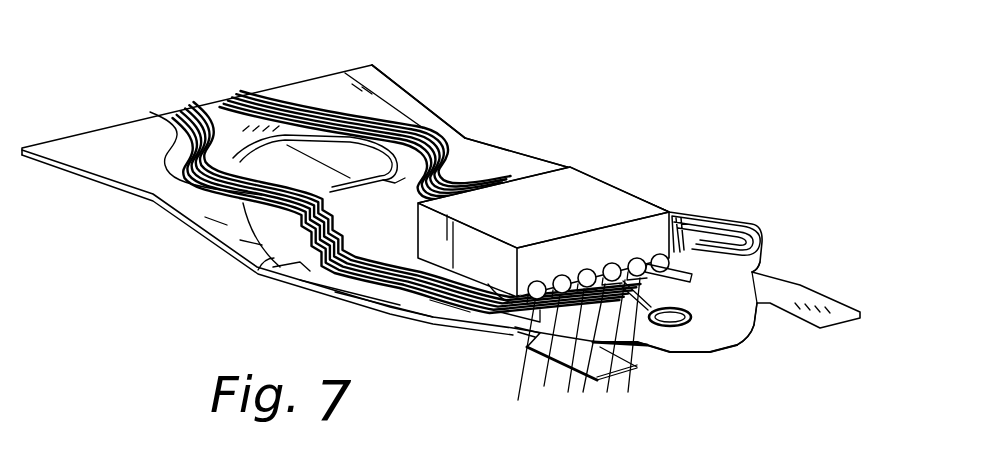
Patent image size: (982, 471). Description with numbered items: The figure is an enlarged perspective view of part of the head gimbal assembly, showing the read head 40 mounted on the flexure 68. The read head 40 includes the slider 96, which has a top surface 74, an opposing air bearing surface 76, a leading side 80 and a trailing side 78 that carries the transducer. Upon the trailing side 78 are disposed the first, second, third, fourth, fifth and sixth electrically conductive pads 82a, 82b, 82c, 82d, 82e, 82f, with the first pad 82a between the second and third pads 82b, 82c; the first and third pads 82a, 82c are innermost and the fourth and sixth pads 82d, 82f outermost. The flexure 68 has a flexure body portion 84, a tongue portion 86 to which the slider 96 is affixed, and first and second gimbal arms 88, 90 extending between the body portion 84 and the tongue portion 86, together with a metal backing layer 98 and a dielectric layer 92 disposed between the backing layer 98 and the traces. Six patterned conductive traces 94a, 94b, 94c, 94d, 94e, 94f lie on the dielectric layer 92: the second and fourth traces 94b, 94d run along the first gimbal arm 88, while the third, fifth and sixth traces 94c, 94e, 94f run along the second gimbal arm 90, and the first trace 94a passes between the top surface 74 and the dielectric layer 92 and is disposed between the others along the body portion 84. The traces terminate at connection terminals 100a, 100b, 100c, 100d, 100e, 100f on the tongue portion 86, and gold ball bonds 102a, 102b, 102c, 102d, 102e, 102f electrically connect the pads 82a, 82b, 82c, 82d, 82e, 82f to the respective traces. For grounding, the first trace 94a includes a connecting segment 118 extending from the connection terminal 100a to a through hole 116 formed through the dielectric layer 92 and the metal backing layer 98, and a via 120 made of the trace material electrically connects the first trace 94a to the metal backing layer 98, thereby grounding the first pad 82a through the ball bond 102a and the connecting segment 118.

The read head 40 is at (543, 232).
The flexure 68 is at (388, 86).
The top surface 74 is at (457, 325).
The air bearing surface 76 is at (570, 164).
The trailing side 78 is at (527, 266).
The leading side 80 is at (408, 236).
The first electrically conductive pad 82a is at (619, 248).
The second electrically conductive pad 82b is at (645, 245).
The third electrically conductive pad 82c is at (599, 251).
The fourth electrically conductive pad 82d is at (668, 242).
The fifth electrically conductive pad 82e is at (572, 258).
The sixth electrically conductive pad 82f is at (545, 266).
The flexure body portion 84 is at (99, 135).
The tongue portion 86 is at (440, 272).
The first gimbal arm 88 is at (533, 160).
The second gimbal arm 90 is at (382, 303).
The dielectric layer 92 is at (167, 172).
The first patterned conductive trace 94a is at (213, 100).
The second patterned conductive trace 94b is at (240, 96).
The third patterned conductive trace 94c is at (184, 106).
The fourth patterned conductive trace 94d is at (225, 98).
The fifth patterned conductive trace 94e is at (168, 110).
The sixth patterned conductive trace 94f is at (158, 108).
The slider 96 is at (512, 231).
The metal backing layer 98 is at (267, 264).
The connection terminal 100a is at (640, 373).
The connection terminal 100b is at (757, 330).
The connection terminal 100c is at (575, 395).
The connection terminal 100d is at (742, 240).
The connection terminal 100e is at (564, 352).
The connection terminal 100f is at (527, 350).
The gold ball bond 102a is at (633, 382).
The gold ball bond 102b is at (752, 271).
The gold ball bond 102c is at (628, 370).
The gold ball bond 102d is at (715, 238).
The gold ball bond 102e is at (575, 393).
The gold ball bond 102f is at (518, 336).
The through hole 116 is at (703, 331).
The connecting segment 118 is at (683, 333).
The via 120 is at (733, 350).